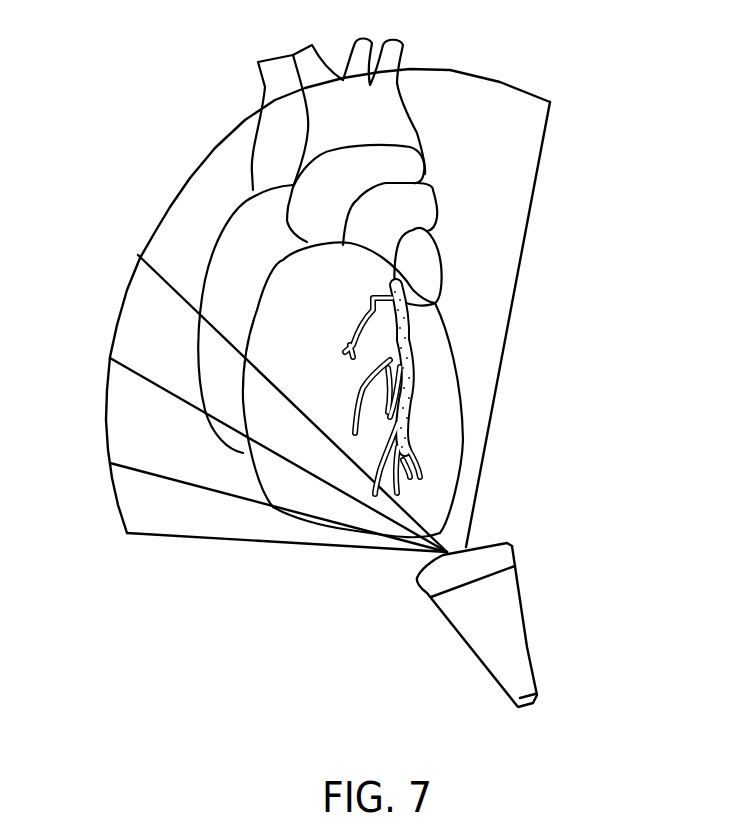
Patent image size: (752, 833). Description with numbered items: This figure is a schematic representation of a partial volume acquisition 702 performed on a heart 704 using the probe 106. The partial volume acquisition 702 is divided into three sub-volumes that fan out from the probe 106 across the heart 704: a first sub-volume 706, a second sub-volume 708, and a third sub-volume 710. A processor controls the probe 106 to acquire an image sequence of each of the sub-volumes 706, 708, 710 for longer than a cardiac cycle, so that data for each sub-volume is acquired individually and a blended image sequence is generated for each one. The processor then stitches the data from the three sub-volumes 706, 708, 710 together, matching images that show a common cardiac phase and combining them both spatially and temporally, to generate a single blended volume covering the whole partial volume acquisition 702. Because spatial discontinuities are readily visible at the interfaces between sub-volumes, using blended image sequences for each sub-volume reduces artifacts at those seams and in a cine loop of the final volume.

The partial volume acquisition 702 is at (562, 290).
The heart 704 is at (442, 403).
The first sub-volume 706 is at (127, 306).
The second sub-volume 708 is at (113, 413).
The third sub-volume 710 is at (130, 510).
The probe 106 is at (515, 607).